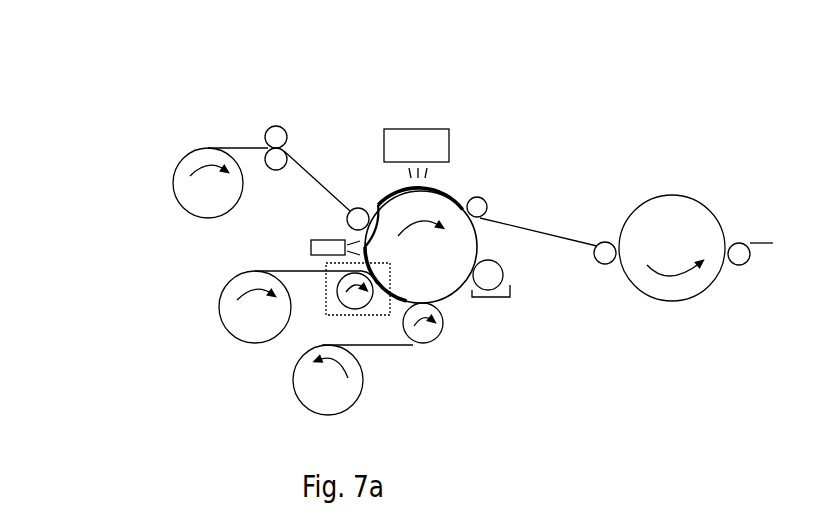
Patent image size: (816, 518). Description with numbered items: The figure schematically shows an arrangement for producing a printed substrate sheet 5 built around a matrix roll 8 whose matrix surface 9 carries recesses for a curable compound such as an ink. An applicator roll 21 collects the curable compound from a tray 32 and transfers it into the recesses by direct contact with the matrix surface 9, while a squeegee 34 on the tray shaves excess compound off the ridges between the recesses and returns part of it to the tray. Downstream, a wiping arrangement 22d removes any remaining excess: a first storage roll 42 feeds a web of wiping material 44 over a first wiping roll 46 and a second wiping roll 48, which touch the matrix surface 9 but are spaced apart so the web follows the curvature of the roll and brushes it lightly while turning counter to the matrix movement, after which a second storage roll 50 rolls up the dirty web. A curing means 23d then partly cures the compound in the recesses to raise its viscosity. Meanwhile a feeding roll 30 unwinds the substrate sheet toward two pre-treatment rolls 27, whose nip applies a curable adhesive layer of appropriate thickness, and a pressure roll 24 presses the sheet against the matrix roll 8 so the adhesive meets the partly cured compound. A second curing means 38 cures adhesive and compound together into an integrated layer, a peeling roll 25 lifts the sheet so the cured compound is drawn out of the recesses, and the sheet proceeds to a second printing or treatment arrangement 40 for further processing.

The printed substrate sheet 5 is at (248, 147).
The matrix roll 8 is at (393, 212).
The matrix surface 9 is at (477, 240).
The applicator roll 21 is at (492, 275).
The wiping arrangement 22d is at (209, 350).
The curing means 23d is at (311, 247).
The pressure roll 24 is at (358, 216).
The peeling roll 25 is at (477, 208).
The pre-treatment rolls 27 is at (276, 136).
The feeding roll 30 is at (197, 190).
The tray 32 is at (497, 299).
The squeegee 34 is at (463, 287).
The second curing means 38 is at (423, 140).
The second printing or treatment arrangement 40 is at (673, 232).
The first storage roll 42 is at (240, 303).
The web of wiping material 44 is at (380, 345).
The first wiping roll 46 is at (345, 299).
The second wiping roll 48 is at (433, 343).
The second storage roll 50 is at (318, 388).